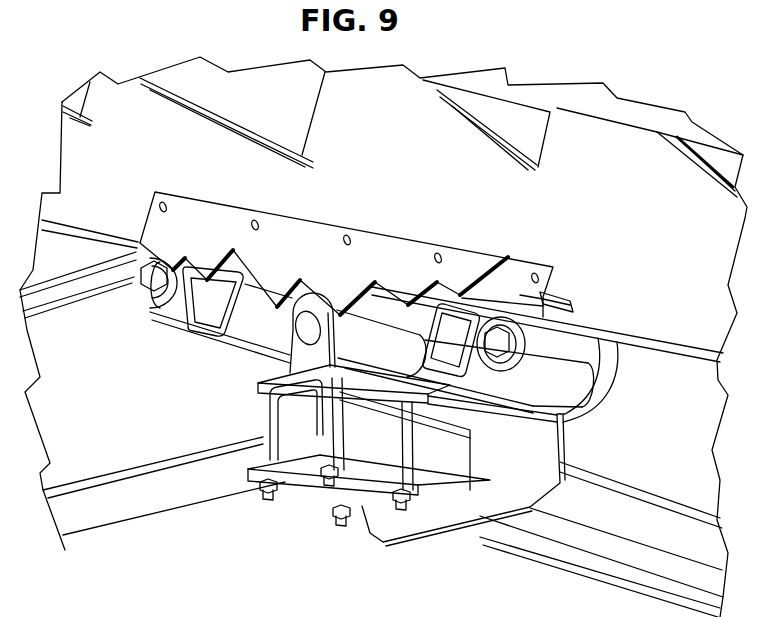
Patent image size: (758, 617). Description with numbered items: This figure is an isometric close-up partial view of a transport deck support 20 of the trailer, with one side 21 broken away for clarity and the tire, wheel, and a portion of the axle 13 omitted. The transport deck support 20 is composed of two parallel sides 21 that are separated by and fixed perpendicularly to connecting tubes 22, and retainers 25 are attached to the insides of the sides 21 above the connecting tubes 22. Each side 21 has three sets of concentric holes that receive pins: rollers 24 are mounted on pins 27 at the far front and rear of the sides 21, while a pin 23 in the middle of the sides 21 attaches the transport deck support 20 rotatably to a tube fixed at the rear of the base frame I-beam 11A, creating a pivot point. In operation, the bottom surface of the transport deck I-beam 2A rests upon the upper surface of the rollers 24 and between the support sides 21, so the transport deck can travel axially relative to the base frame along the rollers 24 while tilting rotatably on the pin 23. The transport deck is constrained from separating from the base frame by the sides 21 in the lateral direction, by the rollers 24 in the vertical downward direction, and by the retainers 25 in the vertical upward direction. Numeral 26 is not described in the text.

The I-beam 2A is at (80, 245).
The I-beam 11A is at (155, 505).
The axle 13 is at (518, 543).
The transport deck support 20 is at (148, 185).
The side 21 is at (397, 237).
The connecting tube 22 is at (197, 327).
The pin 23 is at (293, 336).
The roller 24 is at (150, 312).
The retainer 25 is at (570, 304).
The pivot pin 26 is at (300, 322).
The pin 27 is at (137, 240).